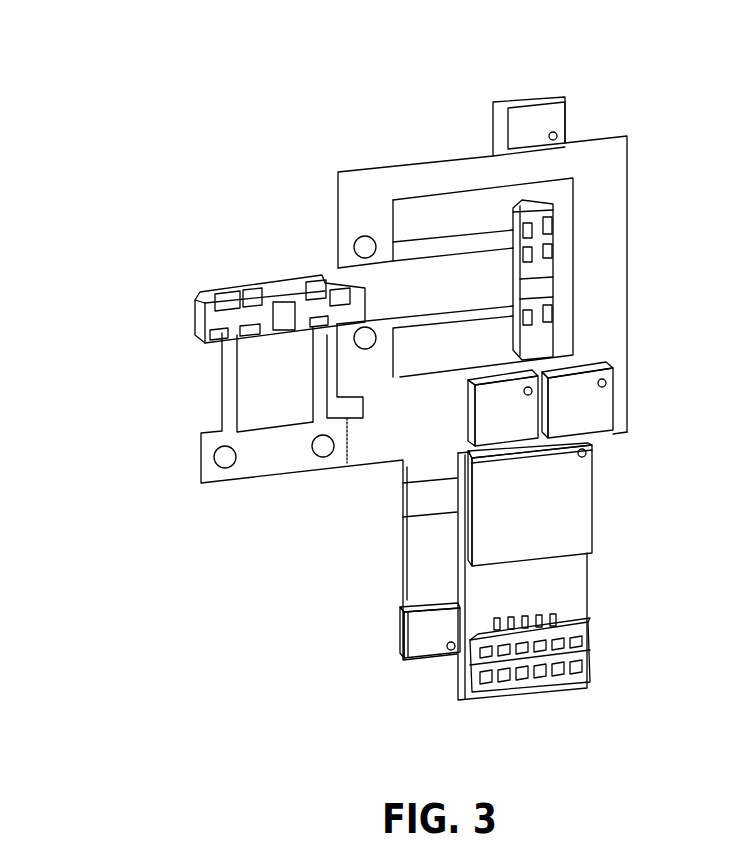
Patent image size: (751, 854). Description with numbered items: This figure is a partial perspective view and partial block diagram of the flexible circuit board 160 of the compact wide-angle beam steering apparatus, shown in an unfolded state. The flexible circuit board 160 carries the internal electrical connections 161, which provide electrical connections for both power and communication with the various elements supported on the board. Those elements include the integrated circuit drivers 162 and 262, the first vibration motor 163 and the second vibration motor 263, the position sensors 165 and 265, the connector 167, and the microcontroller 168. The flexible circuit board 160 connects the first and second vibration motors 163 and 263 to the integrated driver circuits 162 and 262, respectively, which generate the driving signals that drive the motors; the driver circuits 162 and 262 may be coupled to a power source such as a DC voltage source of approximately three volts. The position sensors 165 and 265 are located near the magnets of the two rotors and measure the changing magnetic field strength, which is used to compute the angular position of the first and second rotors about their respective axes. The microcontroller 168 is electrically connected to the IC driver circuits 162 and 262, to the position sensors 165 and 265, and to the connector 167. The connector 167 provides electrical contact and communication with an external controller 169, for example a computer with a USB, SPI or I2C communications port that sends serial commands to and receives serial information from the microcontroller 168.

The flexible circuit board 160 is at (282, 123).
The internal electrical connections 161 is at (250, 467).
The integrated circuit driver 162 is at (603, 411).
The first vibration motor 163 is at (195, 308).
The position sensor 165 is at (420, 645).
The connector 167 is at (587, 648).
The microcontroller 168 is at (578, 522).
The external controller 169 is at (602, 694).
The integrated circuit driver 262 is at (508, 415).
The second vibration motor 263 is at (538, 237).
The position sensor 265 is at (542, 123).